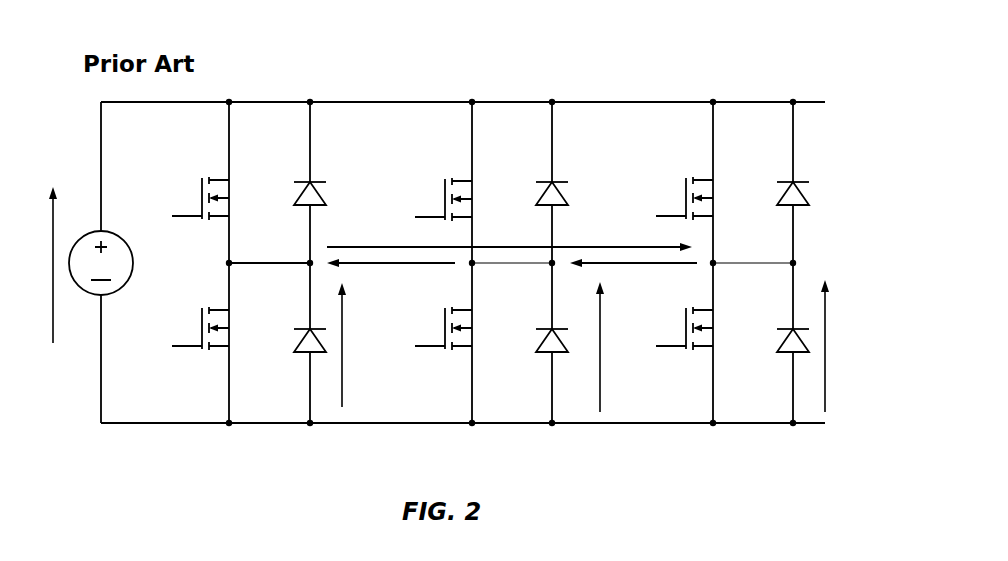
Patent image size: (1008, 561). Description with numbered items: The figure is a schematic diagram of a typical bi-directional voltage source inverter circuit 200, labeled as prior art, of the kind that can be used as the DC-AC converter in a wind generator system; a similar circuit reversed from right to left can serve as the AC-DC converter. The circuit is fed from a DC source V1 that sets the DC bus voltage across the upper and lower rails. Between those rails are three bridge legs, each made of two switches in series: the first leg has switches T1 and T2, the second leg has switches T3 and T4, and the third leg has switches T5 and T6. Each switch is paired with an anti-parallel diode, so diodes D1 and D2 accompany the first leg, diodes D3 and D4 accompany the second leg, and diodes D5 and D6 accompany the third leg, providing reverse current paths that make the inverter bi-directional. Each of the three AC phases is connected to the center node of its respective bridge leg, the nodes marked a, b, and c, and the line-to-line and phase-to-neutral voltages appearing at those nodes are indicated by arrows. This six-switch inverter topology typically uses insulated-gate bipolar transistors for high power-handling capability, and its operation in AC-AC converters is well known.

The bi-directional voltage source inverter circuit 200 is at (706, 62).
The DC voltage source V1 is at (105, 253).
The transistor T1 is at (217, 198).
The transistor T2 is at (217, 328).
The transistor T3 is at (458, 199).
The transistor T4 is at (458, 328).
The transistor T5 is at (700, 198).
The transistor T6 is at (700, 328).
The diode D1 is at (302, 181).
The diode D2 is at (302, 327).
The diode D3 is at (543, 180).
The diode D4 is at (544, 327).
The diode D5 is at (786, 182).
The diode D6 is at (786, 327).